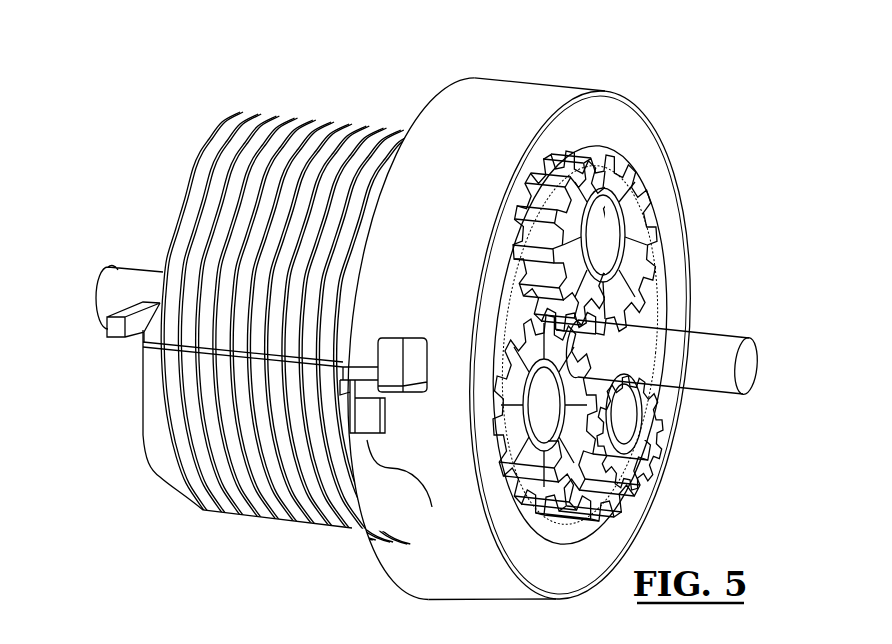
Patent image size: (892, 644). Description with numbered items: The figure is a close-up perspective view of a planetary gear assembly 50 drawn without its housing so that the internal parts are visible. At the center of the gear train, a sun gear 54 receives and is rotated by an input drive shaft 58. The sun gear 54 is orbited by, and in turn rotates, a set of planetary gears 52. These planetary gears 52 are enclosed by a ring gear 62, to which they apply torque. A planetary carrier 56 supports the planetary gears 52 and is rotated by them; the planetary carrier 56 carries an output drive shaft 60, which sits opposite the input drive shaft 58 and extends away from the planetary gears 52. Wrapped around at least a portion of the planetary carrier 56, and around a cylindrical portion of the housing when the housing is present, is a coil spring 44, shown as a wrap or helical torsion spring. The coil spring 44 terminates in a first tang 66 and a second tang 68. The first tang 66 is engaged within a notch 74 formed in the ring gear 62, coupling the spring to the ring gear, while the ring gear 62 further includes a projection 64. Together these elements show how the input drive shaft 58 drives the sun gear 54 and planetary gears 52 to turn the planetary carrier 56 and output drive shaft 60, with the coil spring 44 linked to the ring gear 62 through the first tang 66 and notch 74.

The planetary gear assembly 50 is at (190, 118).
The coil spring 44 is at (190, 410).
The output drive shaft 60 is at (132, 287).
The second tang 68 is at (107, 323).
The ring gear 62 is at (640, 142).
The planetary carrier 56 is at (613, 227).
The sun gear 54 is at (593, 397).
The planetary gears 52 is at (637, 453).
The input drive shaft 58 is at (743, 373).
The projection 64 is at (383, 360).
The first tang 66 is at (347, 410).
The notch 74 is at (408, 487).